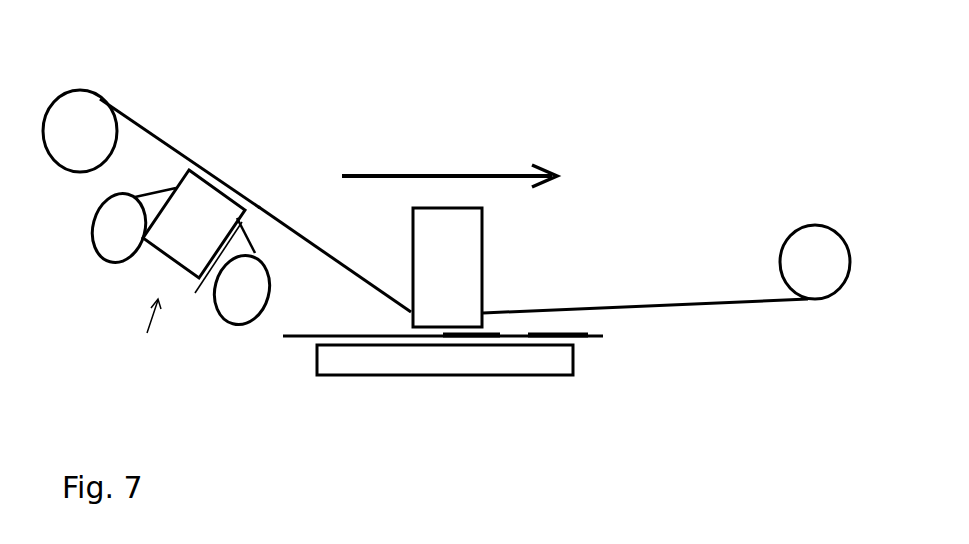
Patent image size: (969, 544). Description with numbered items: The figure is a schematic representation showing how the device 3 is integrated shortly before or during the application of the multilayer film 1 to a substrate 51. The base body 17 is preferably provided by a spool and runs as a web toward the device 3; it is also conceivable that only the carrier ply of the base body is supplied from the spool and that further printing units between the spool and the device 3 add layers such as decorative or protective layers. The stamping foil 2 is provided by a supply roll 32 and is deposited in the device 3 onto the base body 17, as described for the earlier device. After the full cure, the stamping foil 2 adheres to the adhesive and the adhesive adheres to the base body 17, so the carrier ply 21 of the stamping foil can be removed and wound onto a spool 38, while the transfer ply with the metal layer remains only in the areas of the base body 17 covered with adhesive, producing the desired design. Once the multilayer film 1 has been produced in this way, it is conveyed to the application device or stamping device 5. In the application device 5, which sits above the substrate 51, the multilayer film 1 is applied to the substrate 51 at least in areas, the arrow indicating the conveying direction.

The multilayer film 1 is at (312, 242).
The stamping foil 2 is at (157, 193).
The device 3 is at (148, 334).
The application device 5 is at (455, 220).
The base body 17 is at (150, 135).
The carrier ply 21 is at (211, 274).
The supply roll 32 is at (117, 238).
The spool 38 is at (235, 300).
The substrate 51 is at (290, 335).